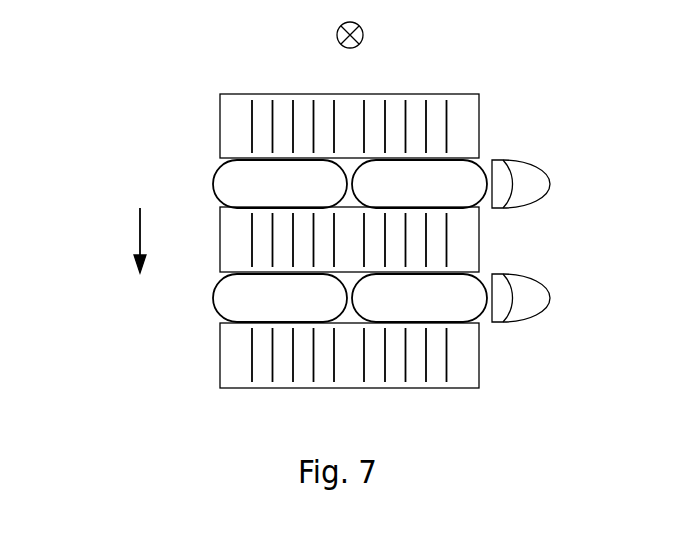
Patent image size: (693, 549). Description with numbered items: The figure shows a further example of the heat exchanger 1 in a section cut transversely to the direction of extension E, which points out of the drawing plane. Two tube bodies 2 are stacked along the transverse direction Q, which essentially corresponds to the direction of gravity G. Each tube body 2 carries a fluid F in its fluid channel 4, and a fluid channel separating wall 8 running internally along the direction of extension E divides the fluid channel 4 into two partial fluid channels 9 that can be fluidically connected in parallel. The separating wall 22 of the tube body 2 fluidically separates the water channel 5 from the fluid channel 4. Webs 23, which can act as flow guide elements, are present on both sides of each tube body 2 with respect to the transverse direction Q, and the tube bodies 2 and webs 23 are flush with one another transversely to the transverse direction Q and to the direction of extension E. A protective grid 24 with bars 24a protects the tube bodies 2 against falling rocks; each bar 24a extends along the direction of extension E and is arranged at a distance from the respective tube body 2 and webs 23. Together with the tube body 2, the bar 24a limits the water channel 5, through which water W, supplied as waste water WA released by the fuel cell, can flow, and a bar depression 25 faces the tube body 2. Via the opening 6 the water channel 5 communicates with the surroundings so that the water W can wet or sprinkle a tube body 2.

The heat exchanger 1 is at (601, 111).
The tube body 2 is at (201, 181).
The fluid channel 4 is at (350, 241).
The partial fluid channel 9 is at (350, 241).
The fluid F is at (310, 196).
The water channel 5 is at (591, 325).
The water W is at (591, 325).
The waste water WA is at (543, 194).
The opening 6 is at (487, 158).
The fluid channel separating wall 8 is at (348, 170).
The separating wall 22 is at (453, 163).
The web 23 is at (252, 127).
The protective grid 24 is at (584, 229).
The bar 24a is at (549, 175).
The bar depression 25 is at (502, 163).
The direction of extension E is at (363, 35).
The transverse direction Q is at (104, 240).
The direction of gravity G is at (140, 240).